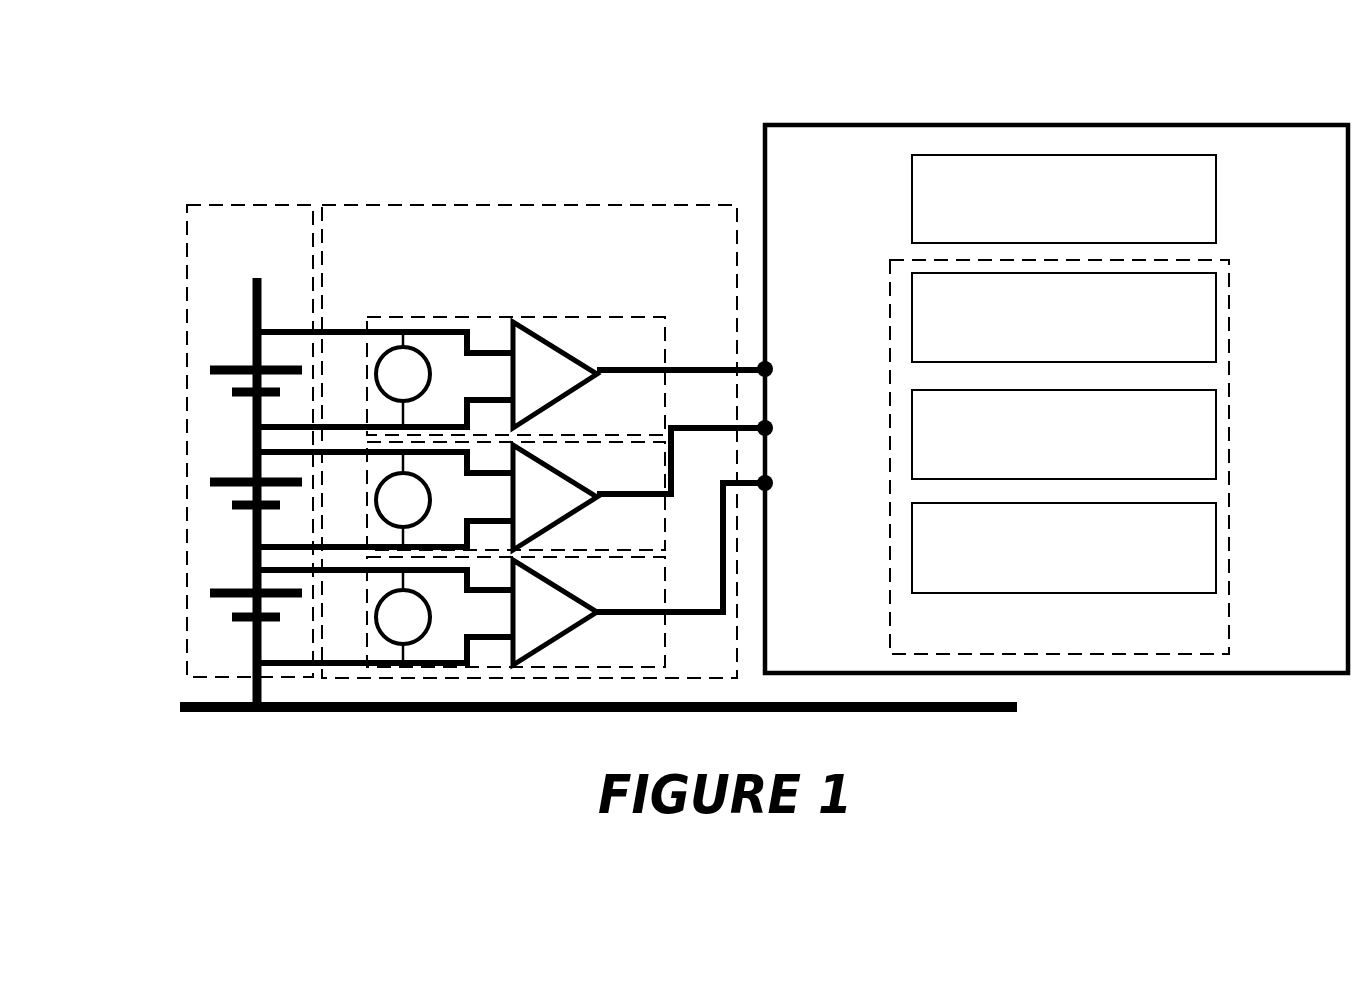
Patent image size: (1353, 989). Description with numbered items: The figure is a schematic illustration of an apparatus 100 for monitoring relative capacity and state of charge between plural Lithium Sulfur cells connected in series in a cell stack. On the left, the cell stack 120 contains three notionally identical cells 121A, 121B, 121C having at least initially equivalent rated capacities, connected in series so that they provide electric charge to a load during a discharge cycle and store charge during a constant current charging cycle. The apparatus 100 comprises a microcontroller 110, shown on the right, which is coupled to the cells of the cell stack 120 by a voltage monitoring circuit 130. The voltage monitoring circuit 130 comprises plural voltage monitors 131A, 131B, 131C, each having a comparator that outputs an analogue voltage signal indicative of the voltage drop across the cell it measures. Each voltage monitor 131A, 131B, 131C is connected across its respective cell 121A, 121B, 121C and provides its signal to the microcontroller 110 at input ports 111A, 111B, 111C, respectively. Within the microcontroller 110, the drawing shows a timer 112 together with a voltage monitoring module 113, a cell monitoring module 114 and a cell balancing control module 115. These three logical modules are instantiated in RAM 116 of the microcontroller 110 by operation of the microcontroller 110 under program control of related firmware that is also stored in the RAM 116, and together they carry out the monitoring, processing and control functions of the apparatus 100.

The apparatus 100 is at (690, 113).
The microcontroller 110 is at (1338, 663).
The input port 111A is at (772, 366).
The input port 111B is at (772, 425).
The input port 111C is at (772, 481).
The timer 112 is at (1088, 236).
The voltage monitoring module 113 is at (1145, 353).
The cell monitoring module 114 is at (1143, 471).
The cell balancing control module 115 is at (1200, 583).
The RAM 116 is at (1215, 644).
The cell stack 120 is at (275, 249).
The cell 121A is at (212, 368).
The cell 121B is at (212, 480).
The cell 121C is at (212, 592).
The voltage monitoring circuit 130 is at (723, 664).
The voltage monitor 131A is at (652, 361).
The voltage monitor 131B is at (652, 486).
The voltage monitor 131C is at (652, 599).